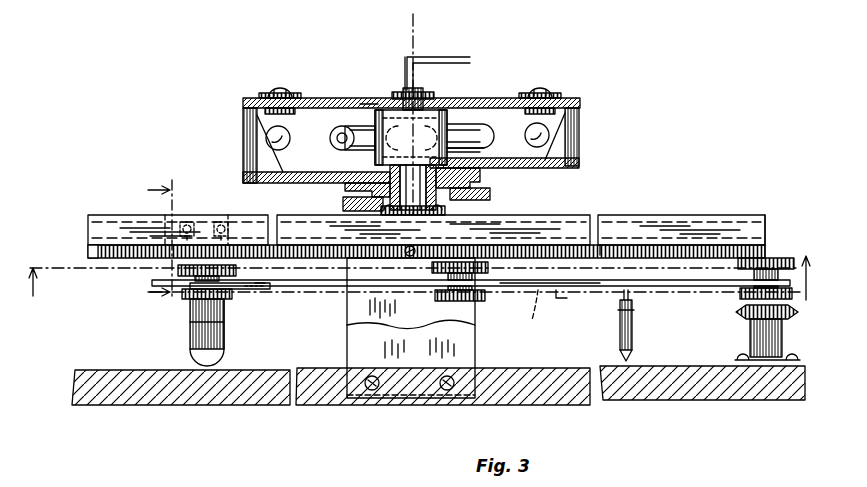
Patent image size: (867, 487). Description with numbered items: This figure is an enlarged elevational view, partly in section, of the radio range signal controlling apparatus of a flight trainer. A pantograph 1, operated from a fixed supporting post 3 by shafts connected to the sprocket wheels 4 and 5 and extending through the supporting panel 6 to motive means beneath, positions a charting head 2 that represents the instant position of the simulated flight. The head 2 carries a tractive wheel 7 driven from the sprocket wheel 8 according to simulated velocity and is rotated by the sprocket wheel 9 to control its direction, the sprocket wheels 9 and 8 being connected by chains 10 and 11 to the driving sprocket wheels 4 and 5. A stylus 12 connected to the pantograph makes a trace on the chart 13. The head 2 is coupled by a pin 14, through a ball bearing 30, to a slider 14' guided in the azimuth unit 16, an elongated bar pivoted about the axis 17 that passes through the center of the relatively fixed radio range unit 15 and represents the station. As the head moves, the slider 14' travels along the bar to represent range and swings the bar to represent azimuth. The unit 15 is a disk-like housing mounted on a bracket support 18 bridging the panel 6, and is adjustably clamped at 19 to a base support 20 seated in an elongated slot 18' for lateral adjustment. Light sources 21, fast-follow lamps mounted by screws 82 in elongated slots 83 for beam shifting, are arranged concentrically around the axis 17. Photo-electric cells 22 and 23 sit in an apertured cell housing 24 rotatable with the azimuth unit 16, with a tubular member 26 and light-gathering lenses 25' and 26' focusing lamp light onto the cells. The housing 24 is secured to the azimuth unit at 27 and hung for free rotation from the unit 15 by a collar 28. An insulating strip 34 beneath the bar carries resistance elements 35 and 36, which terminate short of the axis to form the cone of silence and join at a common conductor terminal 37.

The pantograph 1 is at (561, 303).
The charting head 2 is at (226, 318).
The fixed supporting post 3 is at (750, 342).
The sprocket wheel 4 is at (738, 292).
The sprocket wheel 5 is at (478, 239).
The supporting panel 6 is at (736, 395).
The tractive wheel 7 is at (192, 362).
The sprocket wheel 8 is at (178, 270).
The sprocket wheel 9 is at (180, 302).
The chain 10 is at (442, 328).
The chain 11 is at (522, 287).
The stylus 12 is at (634, 336).
The chart 13 is at (596, 368).
The pin 14 is at (471, 275).
The slider 14' is at (183, 215).
The radio range unit 15 is at (332, 100).
The azimuth unit 16 is at (124, 214).
The axis 17 is at (413, 22).
The bracket support 18 is at (343, 203).
The elongated slot 18' is at (354, 187).
The clamping means 19 is at (480, 182).
The base support 20 is at (440, 205).
The light sources 21 is at (284, 150).
The photo-electric cell 22 is at (376, 104).
The photo-electric cell 23 is at (432, 108).
The cell housing 24 is at (447, 115).
The light-gathering lens 25' is at (340, 134).
The tubular member 26 is at (473, 152).
The light-gathering lens 26' is at (479, 128).
The securing point 27 is at (396, 215).
The collar 28 is at (400, 92).
The ball bearing 30 is at (220, 220).
The insulating strip 34 is at (766, 232).
The resistance element 35 is at (118, 260).
The resistance element 36 is at (670, 258).
The common conductor terminal 37 is at (408, 248).
The screw 82 is at (276, 95).
The elongated slot 83 is at (262, 97).